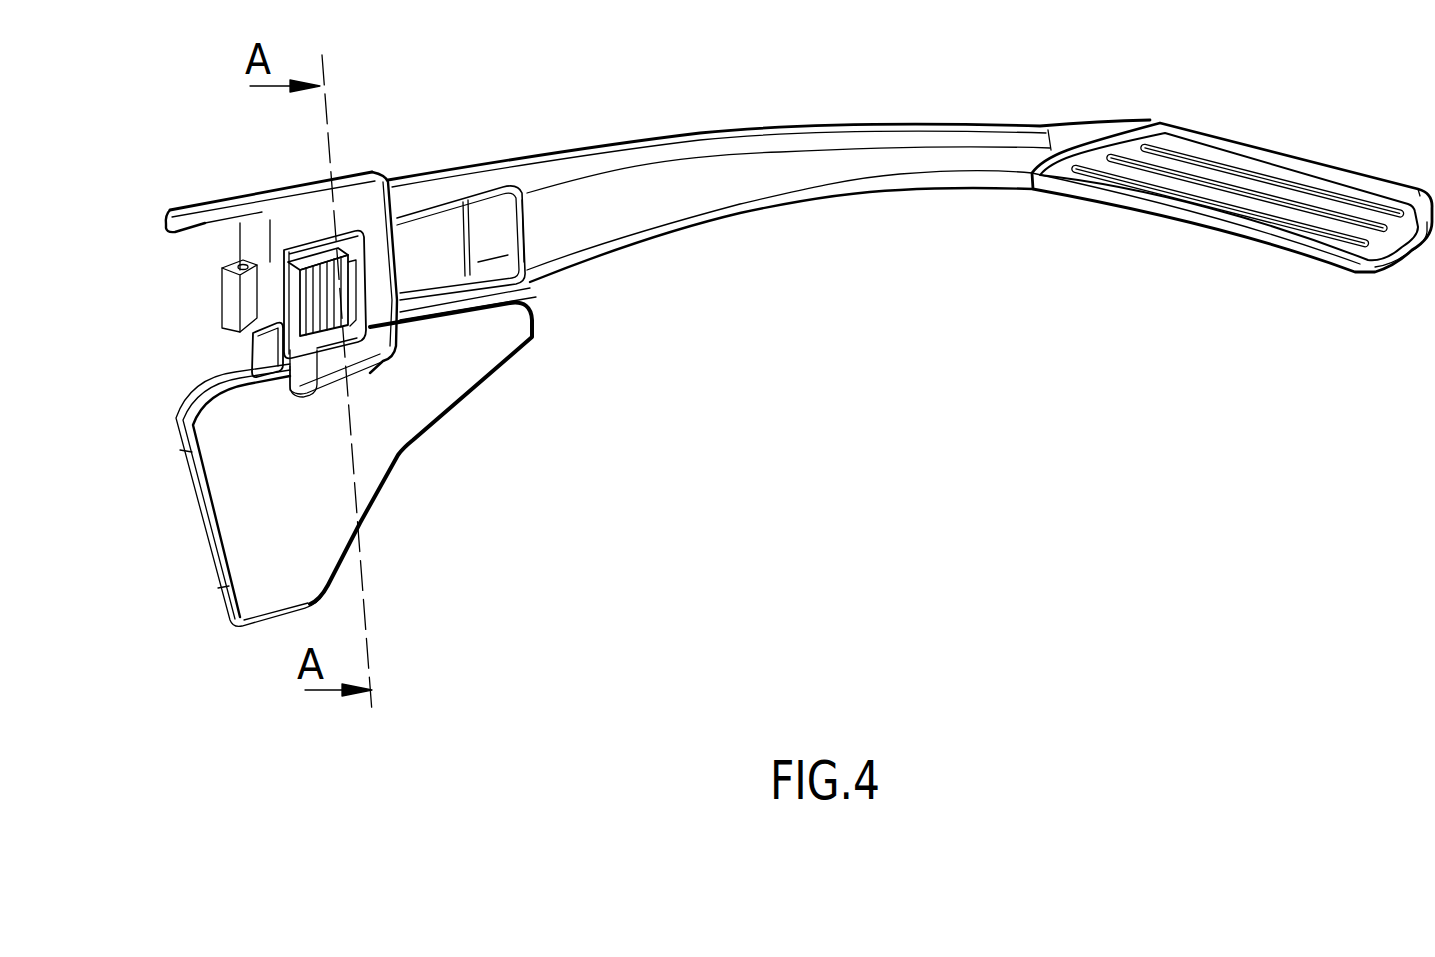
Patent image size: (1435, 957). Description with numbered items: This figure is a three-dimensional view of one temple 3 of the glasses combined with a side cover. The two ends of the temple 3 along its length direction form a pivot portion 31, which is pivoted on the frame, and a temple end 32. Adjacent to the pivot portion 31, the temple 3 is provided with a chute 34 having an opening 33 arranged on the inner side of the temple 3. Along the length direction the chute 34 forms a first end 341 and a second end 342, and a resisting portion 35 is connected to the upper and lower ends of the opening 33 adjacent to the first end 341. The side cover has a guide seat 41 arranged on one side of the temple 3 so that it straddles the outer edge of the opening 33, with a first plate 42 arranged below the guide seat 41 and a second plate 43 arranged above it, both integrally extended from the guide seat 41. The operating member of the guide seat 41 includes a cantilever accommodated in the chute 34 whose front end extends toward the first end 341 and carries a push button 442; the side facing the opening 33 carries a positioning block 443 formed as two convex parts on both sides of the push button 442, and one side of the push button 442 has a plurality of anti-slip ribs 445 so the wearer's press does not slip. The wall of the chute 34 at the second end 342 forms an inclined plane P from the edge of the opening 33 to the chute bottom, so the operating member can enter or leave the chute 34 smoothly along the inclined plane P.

The temple 3 is at (733, 133).
The pivot portion 31 is at (230, 303).
The temple end 32 is at (1283, 157).
The opening 33 is at (410, 230).
The chute 34 is at (415, 277).
The resisting portion 35 is at (320, 253).
The guide seat 41 is at (380, 273).
The first plate 42 is at (377, 467).
The second plate 43 is at (205, 203).
The first end 341 is at (290, 343).
The second end 342 is at (527, 230).
The push button 442 is at (247, 263).
The positioning block 443 is at (238, 224).
The anti-slip ribs 445 is at (380, 370).
The inclined plane P is at (490, 242).